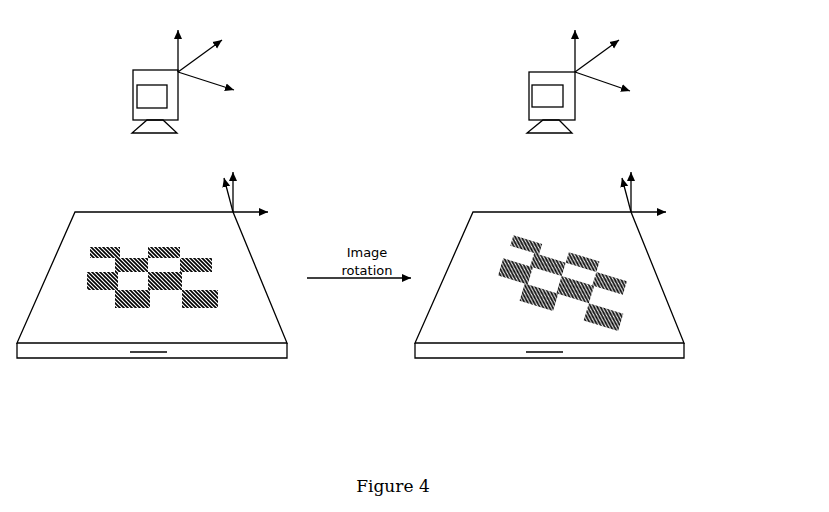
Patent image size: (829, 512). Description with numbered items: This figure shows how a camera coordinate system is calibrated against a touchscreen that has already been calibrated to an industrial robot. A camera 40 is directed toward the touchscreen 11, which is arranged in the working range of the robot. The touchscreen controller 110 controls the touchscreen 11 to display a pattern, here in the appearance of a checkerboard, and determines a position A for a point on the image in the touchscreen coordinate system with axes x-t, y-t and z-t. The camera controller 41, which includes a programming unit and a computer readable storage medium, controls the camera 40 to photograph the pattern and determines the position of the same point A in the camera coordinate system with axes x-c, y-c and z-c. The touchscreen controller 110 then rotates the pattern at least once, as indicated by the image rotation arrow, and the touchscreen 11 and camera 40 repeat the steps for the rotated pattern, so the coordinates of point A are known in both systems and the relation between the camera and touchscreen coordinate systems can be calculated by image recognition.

The camera 40 is at (133, 80).
The camera controller 41 is at (350, 96).
The touchscreen 11 is at (270, 330).
The touchscreen controller 110 is at (147, 358).
The position of a point on the image A is at (115, 264).